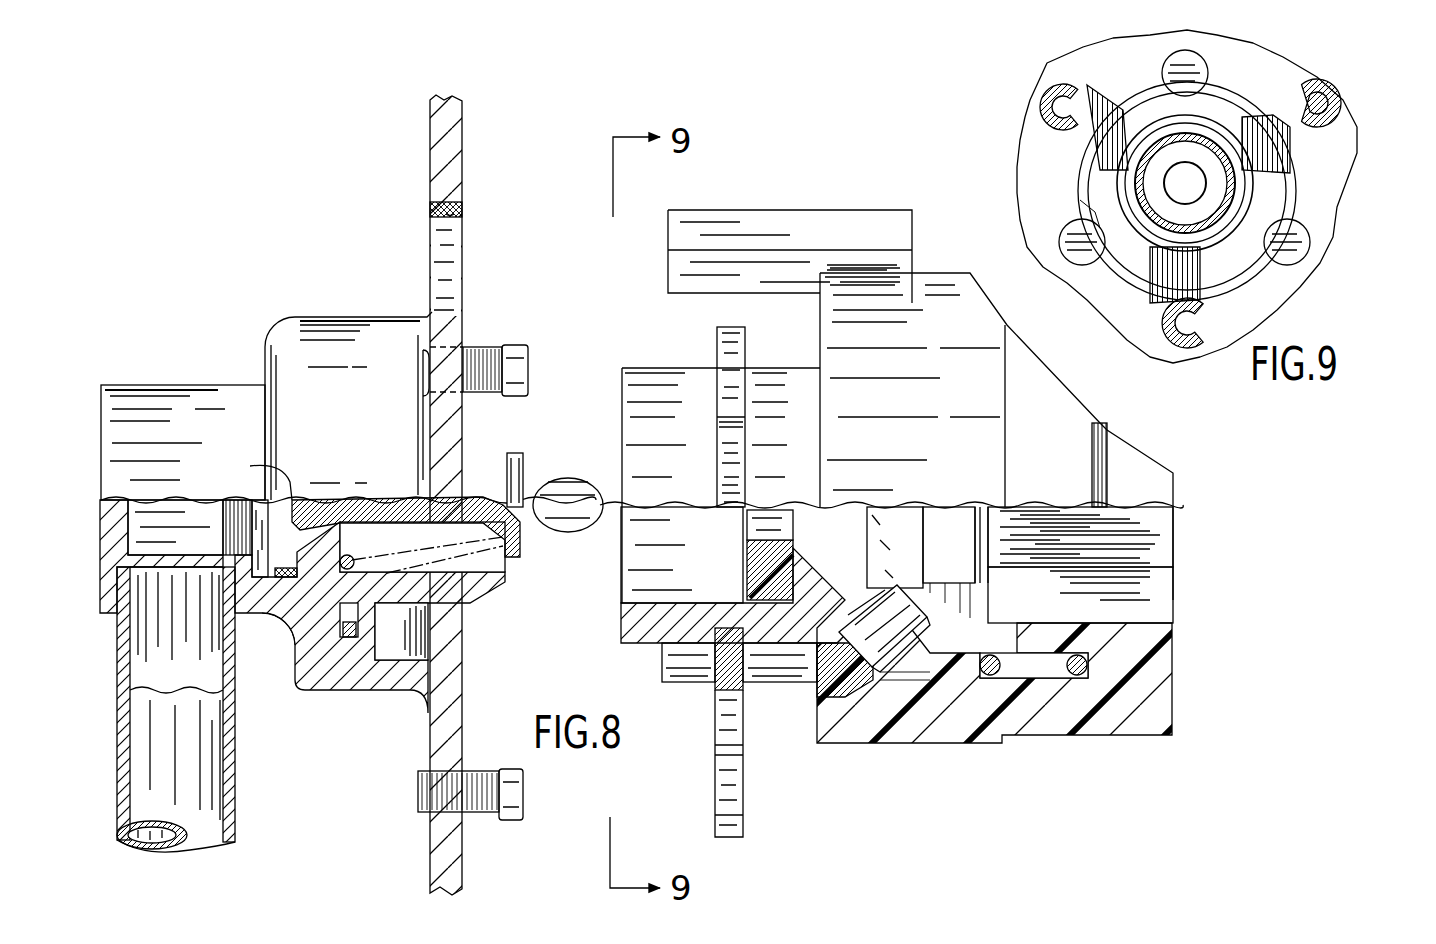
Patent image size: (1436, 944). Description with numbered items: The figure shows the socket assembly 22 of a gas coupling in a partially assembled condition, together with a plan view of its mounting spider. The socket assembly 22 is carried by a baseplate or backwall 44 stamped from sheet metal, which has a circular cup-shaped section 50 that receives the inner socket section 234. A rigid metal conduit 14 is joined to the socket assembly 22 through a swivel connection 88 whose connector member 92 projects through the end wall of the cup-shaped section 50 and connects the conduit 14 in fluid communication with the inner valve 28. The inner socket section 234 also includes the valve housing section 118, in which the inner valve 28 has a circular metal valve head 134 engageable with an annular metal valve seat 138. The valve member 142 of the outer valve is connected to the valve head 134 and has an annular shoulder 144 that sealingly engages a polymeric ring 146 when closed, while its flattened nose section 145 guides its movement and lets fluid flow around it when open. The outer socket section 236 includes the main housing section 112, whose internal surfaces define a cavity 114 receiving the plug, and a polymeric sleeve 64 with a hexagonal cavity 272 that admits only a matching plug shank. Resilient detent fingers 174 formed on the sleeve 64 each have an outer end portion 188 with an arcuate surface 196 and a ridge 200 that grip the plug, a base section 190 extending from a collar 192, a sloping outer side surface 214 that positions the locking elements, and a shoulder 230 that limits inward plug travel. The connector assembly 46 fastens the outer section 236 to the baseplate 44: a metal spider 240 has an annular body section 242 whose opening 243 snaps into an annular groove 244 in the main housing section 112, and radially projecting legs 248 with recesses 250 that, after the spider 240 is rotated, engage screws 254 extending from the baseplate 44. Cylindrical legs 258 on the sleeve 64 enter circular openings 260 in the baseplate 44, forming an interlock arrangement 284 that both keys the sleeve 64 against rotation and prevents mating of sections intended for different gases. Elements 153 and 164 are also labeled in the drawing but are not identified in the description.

In FIG. 8, the rigid metal conduit 14 is at (213, 813).
In FIG. 8, the socket assembly 22 is at (840, 128).
In FIG. 8, the inner valve 28 is at (324, 492).
In FIG. 8, the baseplate or backwall 44 is at (410, 165).
In FIG. 8, the connector assembly 46 is at (546, 862).
In FIG. 8, the cup-shaped section 50 is at (383, 306).
In FIG. 8, the sleeve 64 is at (950, 744).
In FIG. 8, the swivel connection 88 is at (325, 664).
In FIG. 8, the connector member 92 is at (268, 655).
In FIG. 8, the main housing section 112 is at (621, 623).
In FIG. 8, the cavity 114 is at (883, 506).
In FIG. 8, the valve housing section 118 is at (432, 582).
In FIG. 8, the valve head 134 is at (296, 494).
In FIG. 8, the annular metal valve seat 138 is at (330, 552).
In FIG. 8, the valve member 142 is at (538, 474).
In FIG. 8, the annular shoulder 144 is at (518, 568).
In FIG. 8, the nose section 145 is at (572, 515).
In FIG. 8, the polymeric ring 146 is at (392, 494).
In FIG. 8, the wedge 153 is at (813, 652).
In FIG. 9, the flange 164 is at (1093, 180).
In FIG. 8, the detent finger 174 is at (937, 506).
In FIG. 8, the outer end portion 188 is at (996, 538).
In FIG. 8, the base section 190 is at (988, 622).
In FIG. 8, the collar 192 is at (1042, 638).
In FIG. 8, the arcuate side surface 196 is at (922, 535).
In FIG. 8, the arcuate ridge 200 is at (984, 506).
In FIG. 8, the outer side surface 214 is at (950, 625).
In FIG. 8, the shoulders 230 is at (995, 593).
In FIG. 8, the inner socket section 234 is at (480, 336).
In FIG. 8, the outer socket section 236 is at (930, 240).
In FIG. 8, the spider 240 is at (712, 690).
In FIG. 9, the spider 240 is at (1303, 207).
In FIG. 8, the annular main body section 242 is at (668, 652).
In FIG. 9, the annular main body section 242 is at (1103, 197).
In FIG. 9, the opening 243 is at (1163, 110).
In FIG. 8, the annular groove 244 is at (725, 628).
In FIG. 8, the legs 248 is at (730, 840).
In FIG. 9, the legs 248 is at (1047, 105).
In FIG. 8, the recesses 250 is at (733, 800).
In FIG. 9, the recesses 250 is at (1287, 100).
In FIG. 8, the screws 254 is at (509, 362).
In FIG. 8, the interlock legs 258 is at (780, 232).
In FIG. 9, the interlock legs 258 is at (1192, 63).
In FIG. 8, the openings 260 is at (458, 222).
In FIG. 8, the cavity 272 is at (1153, 588).
In FIG. 8, the interlock arrangement 284 is at (683, 172).